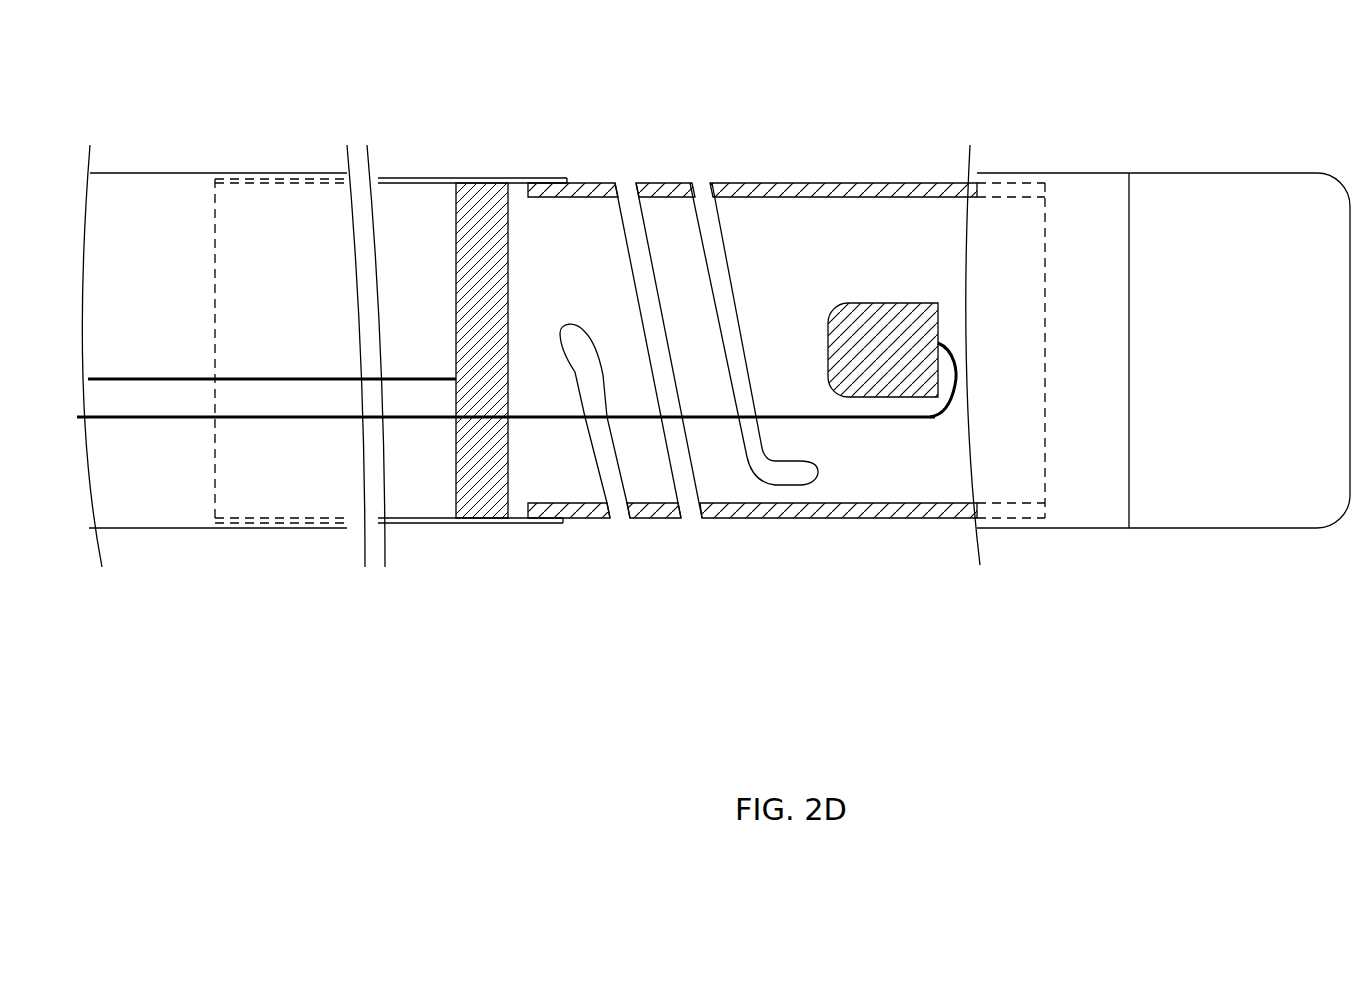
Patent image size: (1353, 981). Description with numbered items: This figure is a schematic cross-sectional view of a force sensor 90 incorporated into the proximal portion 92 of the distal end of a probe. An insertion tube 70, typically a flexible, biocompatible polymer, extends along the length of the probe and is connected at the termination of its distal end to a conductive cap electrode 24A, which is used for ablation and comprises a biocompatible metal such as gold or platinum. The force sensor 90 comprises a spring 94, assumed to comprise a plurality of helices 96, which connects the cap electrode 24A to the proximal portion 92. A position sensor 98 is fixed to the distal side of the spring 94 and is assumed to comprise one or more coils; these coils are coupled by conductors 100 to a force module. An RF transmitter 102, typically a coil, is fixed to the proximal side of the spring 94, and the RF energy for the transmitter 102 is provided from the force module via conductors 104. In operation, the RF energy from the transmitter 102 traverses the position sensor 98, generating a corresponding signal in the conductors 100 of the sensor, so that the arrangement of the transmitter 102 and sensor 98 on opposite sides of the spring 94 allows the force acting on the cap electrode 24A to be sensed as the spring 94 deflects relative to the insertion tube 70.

The conductive cap electrode 24A is at (1253, 528).
The insertion tube 70 is at (137, 530).
The force sensor 90 is at (409, 109).
The proximal portion of the distal end 92 is at (215, 528).
The spring 94 is at (900, 519).
The helices 96 is at (700, 187).
The position sensor 98 is at (885, 303).
The conductors 100 is at (288, 421).
The RF transmitter 102 is at (508, 293).
The conductors 104 is at (304, 379).